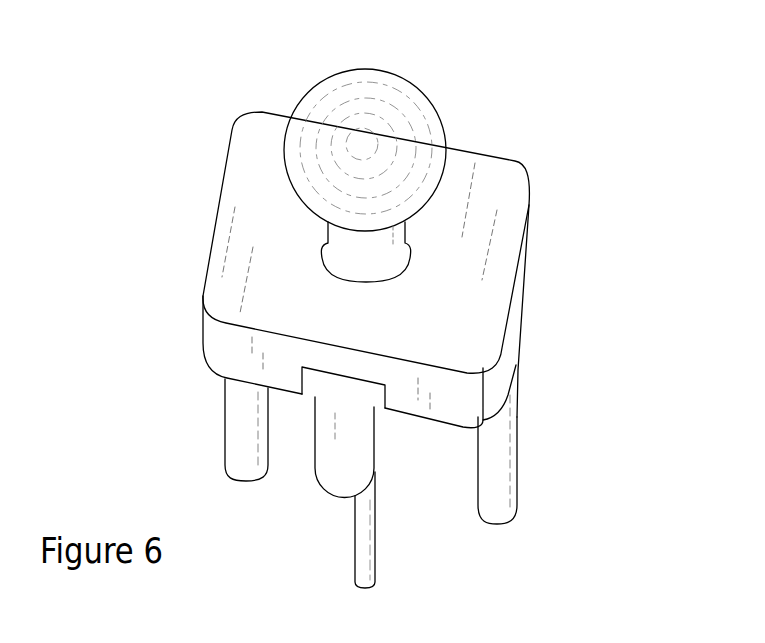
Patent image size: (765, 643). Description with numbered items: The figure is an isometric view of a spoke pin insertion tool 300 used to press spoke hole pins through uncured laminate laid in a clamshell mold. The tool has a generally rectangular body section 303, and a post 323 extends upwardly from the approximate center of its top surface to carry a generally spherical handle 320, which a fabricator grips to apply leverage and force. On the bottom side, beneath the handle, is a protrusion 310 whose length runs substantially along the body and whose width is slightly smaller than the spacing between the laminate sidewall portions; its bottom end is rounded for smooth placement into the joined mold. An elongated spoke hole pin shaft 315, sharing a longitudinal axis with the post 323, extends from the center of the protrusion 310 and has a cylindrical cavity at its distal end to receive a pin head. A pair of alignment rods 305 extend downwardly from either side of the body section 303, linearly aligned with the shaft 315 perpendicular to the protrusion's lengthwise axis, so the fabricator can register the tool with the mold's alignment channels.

The spoke pin insertion tool 300 is at (551, 201).
The body section 303 is at (243, 228).
The alignment rods 305 is at (232, 407).
The protrusion 310 is at (335, 473).
The spoke hole pin shaft 315 is at (362, 552).
The handle 320 is at (303, 102).
The post 323 is at (378, 258).